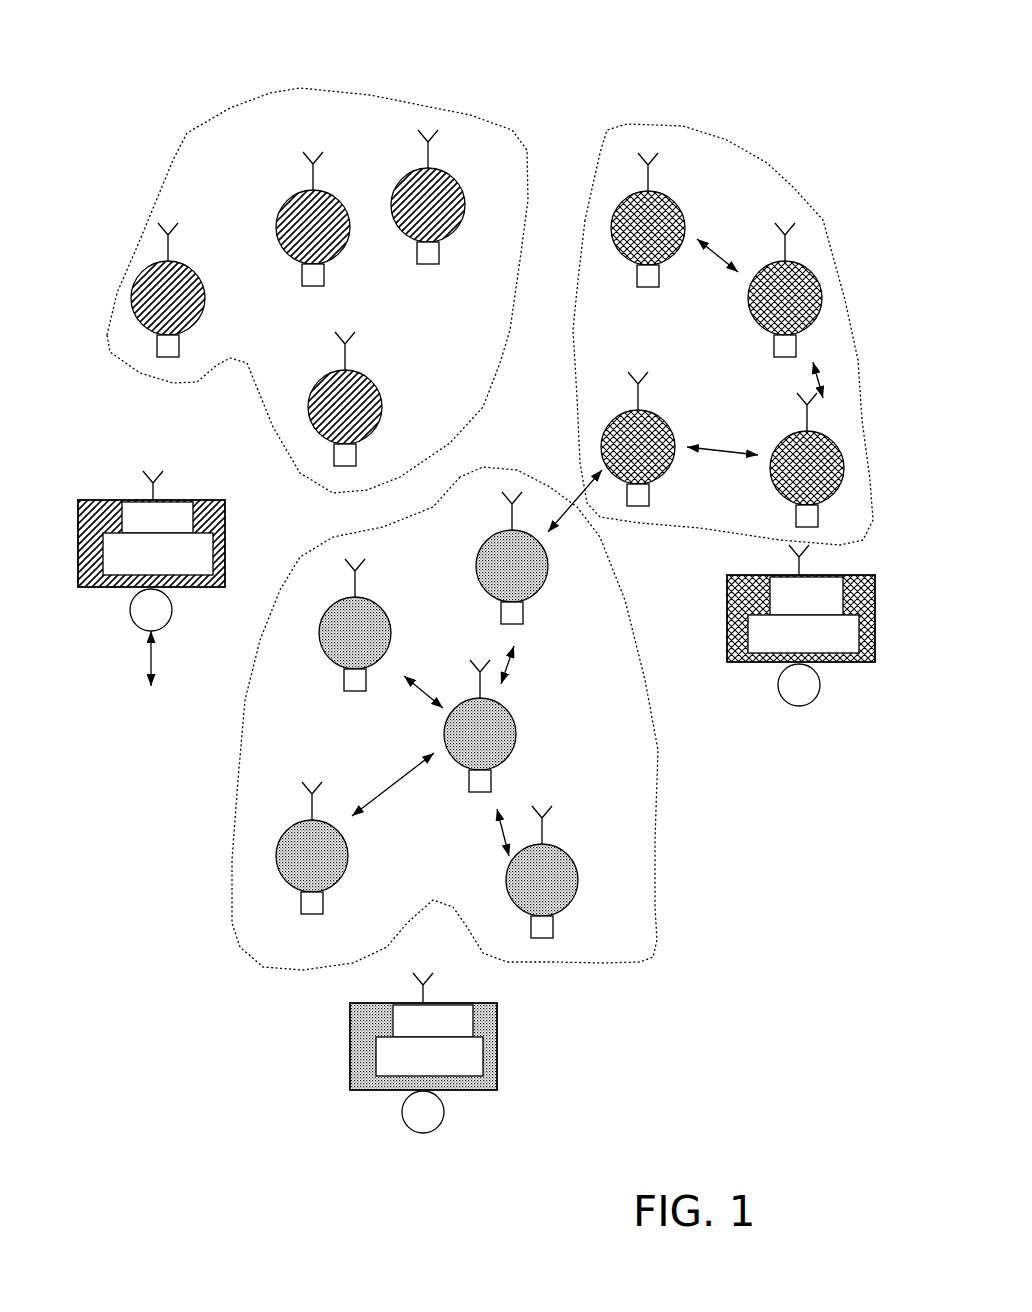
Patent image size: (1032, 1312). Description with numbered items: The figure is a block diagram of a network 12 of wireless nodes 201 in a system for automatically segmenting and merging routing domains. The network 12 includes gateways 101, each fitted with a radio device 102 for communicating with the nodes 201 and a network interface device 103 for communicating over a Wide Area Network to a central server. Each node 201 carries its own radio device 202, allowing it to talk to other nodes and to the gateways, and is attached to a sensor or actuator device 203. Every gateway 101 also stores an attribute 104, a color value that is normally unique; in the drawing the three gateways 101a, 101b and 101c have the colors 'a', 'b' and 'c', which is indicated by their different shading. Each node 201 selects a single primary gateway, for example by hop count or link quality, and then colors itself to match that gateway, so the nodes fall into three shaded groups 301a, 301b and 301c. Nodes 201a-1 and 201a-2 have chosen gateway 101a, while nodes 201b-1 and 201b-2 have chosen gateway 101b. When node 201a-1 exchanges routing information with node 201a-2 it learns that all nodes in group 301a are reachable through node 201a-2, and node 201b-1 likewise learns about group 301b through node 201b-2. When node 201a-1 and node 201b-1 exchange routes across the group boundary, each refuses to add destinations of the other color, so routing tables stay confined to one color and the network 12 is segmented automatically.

The network 12 is at (155, 88).
The gateway 101 is at (190, 543).
The gateway 101a is at (423, 1053).
The gateway 101b is at (801, 625).
The gateway 101c is at (151, 543).
The radio device 102 is at (160, 464).
The network interface device 103 is at (172, 610).
The attribute 104 is at (158, 554).
The wireless node 201 is at (128, 302).
The radio device 202 is at (155, 233).
The sensor or actuator device 203 is at (152, 358).
The node 201a-1 is at (545, 558).
The node 201a-2 is at (519, 726).
The node 201b-1 is at (666, 439).
The node 201b-2 is at (832, 460).
The group 301a is at (653, 937).
The group 301b is at (684, 125).
The group 301c is at (372, 97).